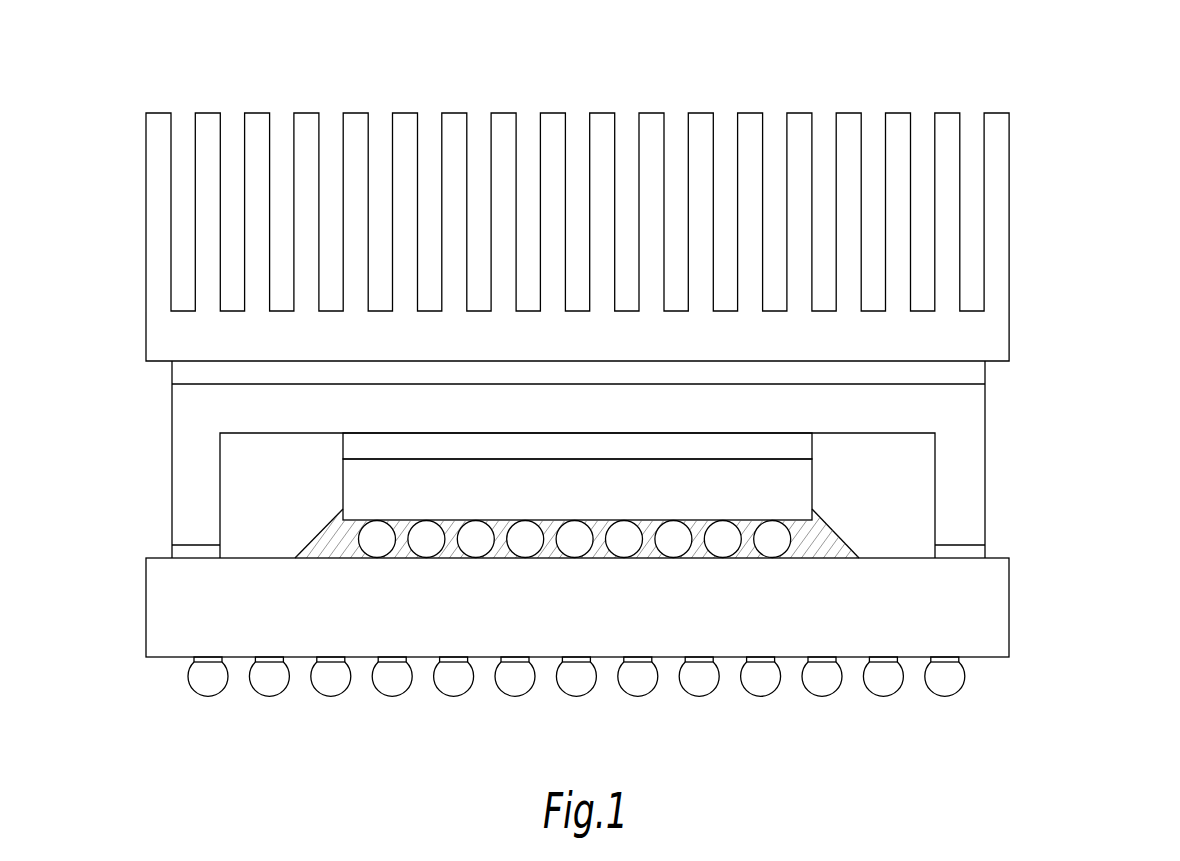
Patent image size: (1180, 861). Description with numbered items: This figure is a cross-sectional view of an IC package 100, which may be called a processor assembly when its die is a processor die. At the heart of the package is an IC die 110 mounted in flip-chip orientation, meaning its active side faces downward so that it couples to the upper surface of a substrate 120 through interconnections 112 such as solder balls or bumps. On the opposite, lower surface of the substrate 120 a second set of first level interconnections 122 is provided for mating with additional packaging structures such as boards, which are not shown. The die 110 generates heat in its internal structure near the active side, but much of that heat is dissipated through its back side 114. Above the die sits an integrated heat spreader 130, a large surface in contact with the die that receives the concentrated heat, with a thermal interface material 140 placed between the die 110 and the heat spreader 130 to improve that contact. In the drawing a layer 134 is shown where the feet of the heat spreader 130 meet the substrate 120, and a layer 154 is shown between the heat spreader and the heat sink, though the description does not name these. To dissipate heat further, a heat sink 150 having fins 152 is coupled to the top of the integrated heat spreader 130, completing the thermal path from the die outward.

The IC package 100 is at (1096, 50).
The IC die 110 is at (552, 281).
The interconnections 112 is at (379, 543).
The back side 114 is at (553, 458).
The substrate 120 is at (162, 657).
The first level interconnections 122 is at (213, 693).
The integrated heat spreader 130 is at (561, 459).
The lid adhesive 134 is at (192, 552).
The thermal interface material 140 is at (785, 450).
The heat sink 150 is at (609, 237).
The fins 152 is at (1010, 233).
The thermal interface material between lid and heat sink 154 is at (973, 373).